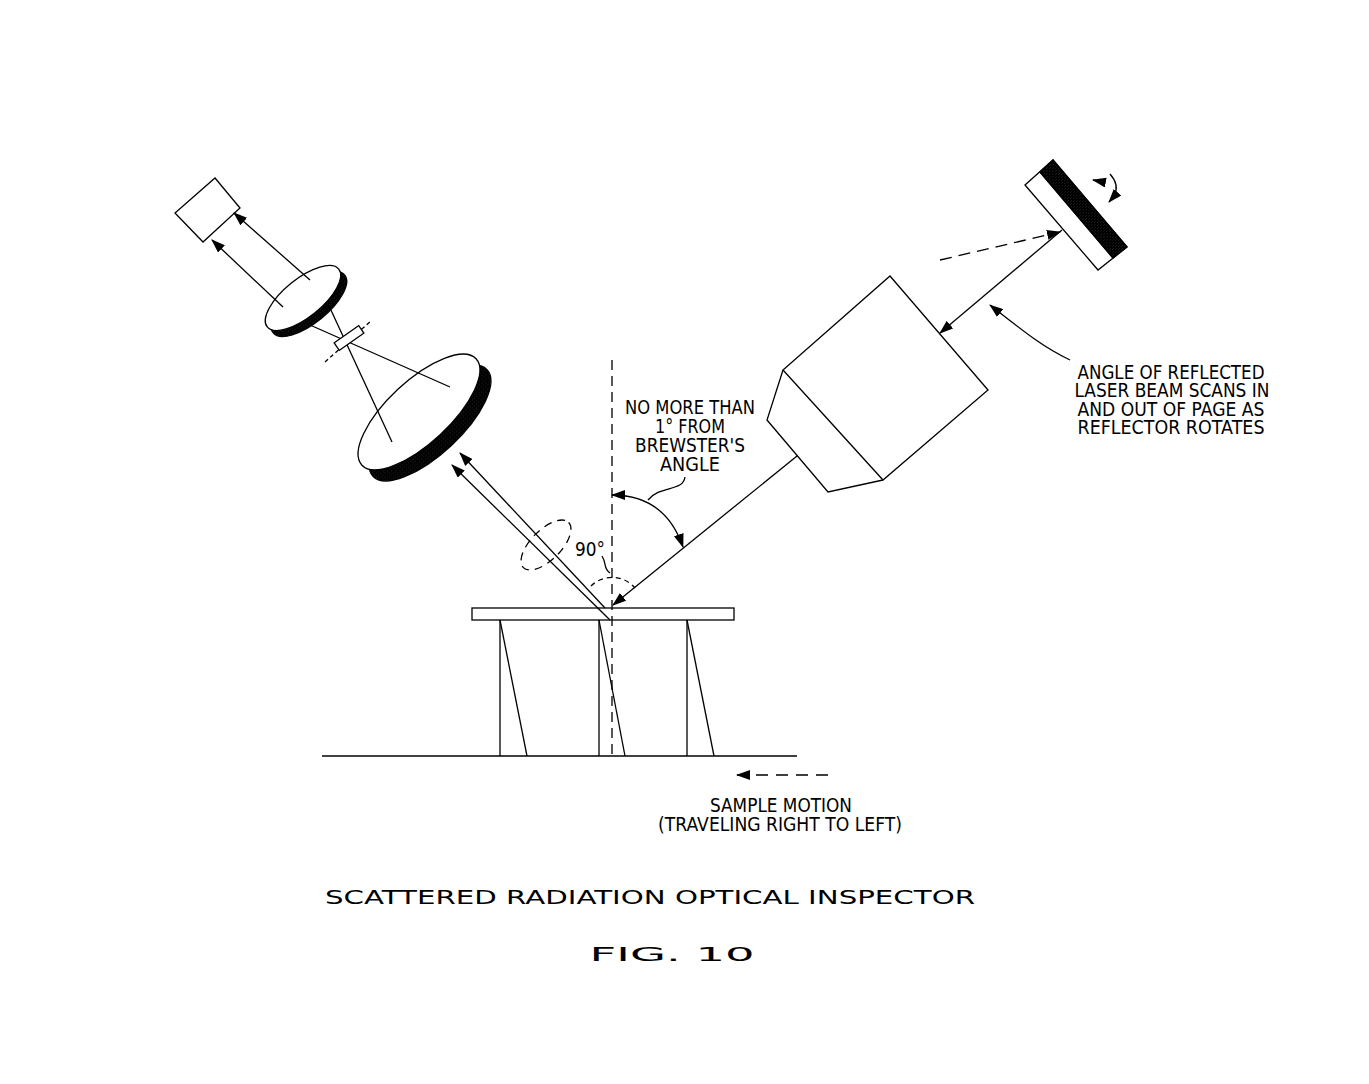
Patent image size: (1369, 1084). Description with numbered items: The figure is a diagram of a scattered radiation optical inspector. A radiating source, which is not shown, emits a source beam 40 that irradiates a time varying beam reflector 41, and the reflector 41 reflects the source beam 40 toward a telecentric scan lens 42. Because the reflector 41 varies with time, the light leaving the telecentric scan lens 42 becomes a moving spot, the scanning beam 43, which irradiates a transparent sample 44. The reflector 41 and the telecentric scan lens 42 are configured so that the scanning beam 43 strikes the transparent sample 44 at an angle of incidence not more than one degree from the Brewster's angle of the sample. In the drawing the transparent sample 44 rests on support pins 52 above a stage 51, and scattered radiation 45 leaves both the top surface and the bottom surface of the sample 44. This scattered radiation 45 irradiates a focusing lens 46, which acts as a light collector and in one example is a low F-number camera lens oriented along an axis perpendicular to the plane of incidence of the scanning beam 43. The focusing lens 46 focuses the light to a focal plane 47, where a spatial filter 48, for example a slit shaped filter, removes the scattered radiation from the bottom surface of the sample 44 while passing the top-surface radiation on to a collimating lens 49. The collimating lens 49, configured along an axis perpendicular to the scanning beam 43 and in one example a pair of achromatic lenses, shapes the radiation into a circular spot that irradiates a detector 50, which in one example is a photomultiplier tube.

The source beam 40 is at (962, 250).
The time varying beam reflector 41 is at (1048, 157).
The telecentric scan lens 42 is at (873, 416).
The scanning beam 43 is at (742, 508).
The transparent sample 44 is at (734, 614).
The scattered radiation 45 is at (522, 562).
The focusing lens 46 is at (478, 352).
The focal plane 47 is at (323, 365).
The spatial filter 48 is at (357, 321).
The collimating lens 49 is at (263, 330).
The detector 50 is at (213, 178).
The stage 51 is at (322, 756).
The support pins 52 is at (593, 673).